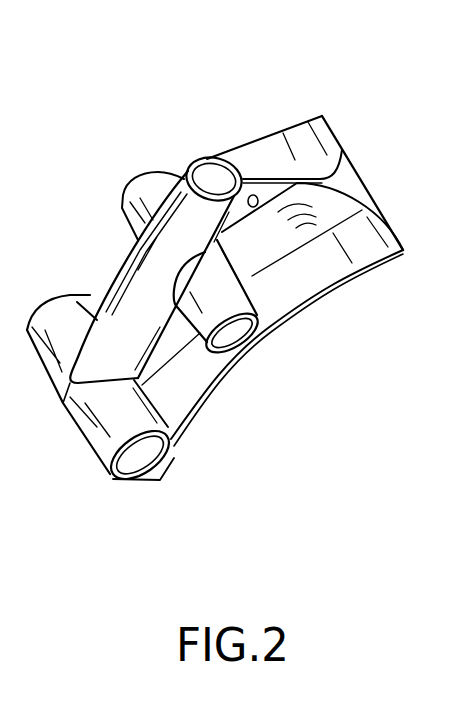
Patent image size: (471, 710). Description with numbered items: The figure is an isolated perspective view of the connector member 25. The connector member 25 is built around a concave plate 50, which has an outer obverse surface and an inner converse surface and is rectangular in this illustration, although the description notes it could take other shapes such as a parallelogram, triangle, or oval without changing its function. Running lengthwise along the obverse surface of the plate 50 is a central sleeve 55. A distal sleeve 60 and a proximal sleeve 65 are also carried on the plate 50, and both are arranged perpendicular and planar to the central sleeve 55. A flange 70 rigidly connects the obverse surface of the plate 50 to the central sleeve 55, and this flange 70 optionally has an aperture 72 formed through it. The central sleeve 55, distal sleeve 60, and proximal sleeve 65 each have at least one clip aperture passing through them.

The connector member 25 is at (105, 151).
The concave plate 50 is at (312, 300).
The central sleeve 55 is at (205, 158).
The distal sleeve 60 is at (123, 463).
The proximal sleeve 65 is at (228, 352).
The flange 70 is at (256, 179).
The aperture 72 is at (259, 197).